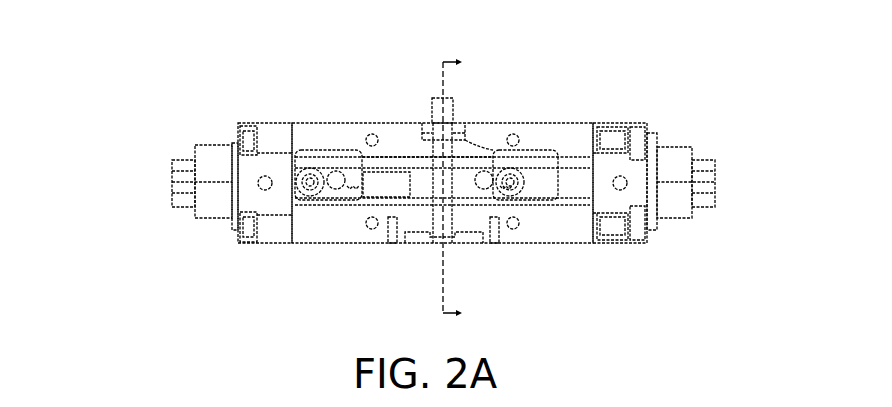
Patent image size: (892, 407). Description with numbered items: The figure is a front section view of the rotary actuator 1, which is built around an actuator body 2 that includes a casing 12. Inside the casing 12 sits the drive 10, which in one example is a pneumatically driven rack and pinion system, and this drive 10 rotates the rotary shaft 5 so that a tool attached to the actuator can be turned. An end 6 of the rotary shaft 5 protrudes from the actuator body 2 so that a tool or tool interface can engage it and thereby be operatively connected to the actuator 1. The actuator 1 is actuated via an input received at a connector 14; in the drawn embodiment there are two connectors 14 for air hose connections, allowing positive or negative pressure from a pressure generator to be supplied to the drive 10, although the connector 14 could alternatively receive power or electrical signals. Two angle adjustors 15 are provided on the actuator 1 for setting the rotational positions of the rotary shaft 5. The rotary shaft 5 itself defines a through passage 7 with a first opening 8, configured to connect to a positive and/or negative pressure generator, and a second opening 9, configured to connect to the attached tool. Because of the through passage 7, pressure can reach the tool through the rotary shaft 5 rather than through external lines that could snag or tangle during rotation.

The rotary actuator 1 is at (266, 56).
The actuator body 2 is at (350, 123).
The rotary shaft 5 is at (492, 130).
The end of rotary shaft 6 is at (430, 118).
The through passage 7 is at (448, 157).
The first opening 8 is at (445, 243).
The second opening 9 is at (440, 97).
The drive 10 is at (385, 197).
The casing 12 is at (592, 122).
The connector 14 is at (265, 190).
The angle adjustor 15 is at (172, 164).